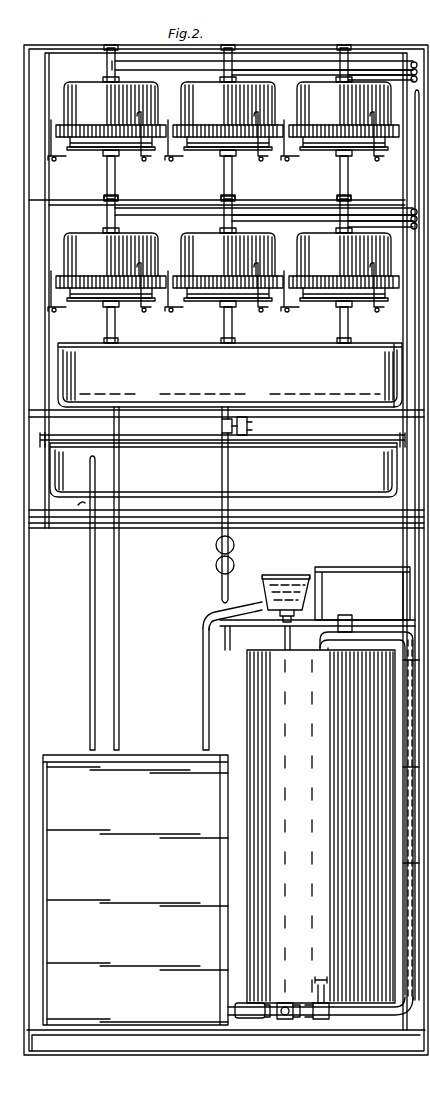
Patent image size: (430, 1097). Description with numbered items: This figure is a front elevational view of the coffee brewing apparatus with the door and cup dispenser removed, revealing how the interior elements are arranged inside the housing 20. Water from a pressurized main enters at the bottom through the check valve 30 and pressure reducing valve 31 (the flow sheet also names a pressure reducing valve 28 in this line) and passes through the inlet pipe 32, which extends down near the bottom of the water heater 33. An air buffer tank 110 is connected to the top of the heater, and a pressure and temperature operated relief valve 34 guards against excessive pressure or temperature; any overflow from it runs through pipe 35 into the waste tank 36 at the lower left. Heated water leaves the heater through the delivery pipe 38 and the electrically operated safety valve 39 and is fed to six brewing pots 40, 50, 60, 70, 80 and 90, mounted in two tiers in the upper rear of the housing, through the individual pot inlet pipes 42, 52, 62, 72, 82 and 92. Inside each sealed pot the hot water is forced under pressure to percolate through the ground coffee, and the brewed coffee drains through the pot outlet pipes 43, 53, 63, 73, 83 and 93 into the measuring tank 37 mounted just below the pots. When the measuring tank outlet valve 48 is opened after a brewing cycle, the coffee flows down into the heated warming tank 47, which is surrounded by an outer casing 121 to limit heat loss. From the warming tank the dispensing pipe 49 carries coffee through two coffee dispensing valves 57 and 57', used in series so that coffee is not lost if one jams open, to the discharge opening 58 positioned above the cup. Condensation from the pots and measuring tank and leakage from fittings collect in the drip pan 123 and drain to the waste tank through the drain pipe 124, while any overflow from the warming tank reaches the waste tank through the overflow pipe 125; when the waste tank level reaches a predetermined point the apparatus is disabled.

The housing 20 is at (38, 37).
The pressure reducing valve 28 is at (322, 1022).
The check valve 30 is at (240, 1015).
The pressure reducing valve 31 is at (284, 1020).
The inlet pipe 32 is at (365, 1012).
The water heater 33 is at (306, 781).
The pressure and temperature operated relief valve 34 is at (292, 576).
The pipe 35 is at (200, 667).
The waste tank 36 is at (133, 786).
The measuring tank 37 is at (212, 378).
The delivery pipe 38 is at (332, 635).
The safety valve 39 is at (355, 620).
The brewing pot 40 is at (99, 121).
The pot inlet pipe 42 is at (166, 58).
The pot outlet pipe 43 is at (118, 181).
The warming tank 47 is at (191, 482).
The measuring tank outlet valve 48 is at (247, 422).
The dispensing pipe 49 is at (229, 505).
The brewing pot 50 is at (215, 121).
The pot inlet pipe 52 is at (287, 62).
The pot outlet pipe 53 is at (233, 181).
The coffee dispensing valve 57 is at (238, 546).
The coffee dispensing valve 57' is at (204, 574).
The discharge opening 58 is at (213, 609).
The brewing pot 60 is at (329, 121).
The pot inlet pipe 62 is at (392, 60).
The pot outlet pipe 63 is at (349, 181).
The brewing pot 70 is at (99, 272).
The pot inlet pipe 72 is at (180, 213).
The pot outlet pipe 73 is at (118, 329).
The brewing pot 80 is at (215, 272).
The pot inlet pipe 82 is at (290, 213).
The pot outlet pipe 83 is at (233, 329).
The brewing pot 90 is at (329, 272).
The pot inlet pipe 92 is at (385, 212).
The pot outlet pipe 93 is at (349, 329).
The air buffer tank 110 is at (368, 578).
The outer casing 121 is at (78, 510).
The drip pan 123 is at (376, 396).
The drain pipe 124 is at (119, 566).
The overflow pipe 125 is at (90, 606).